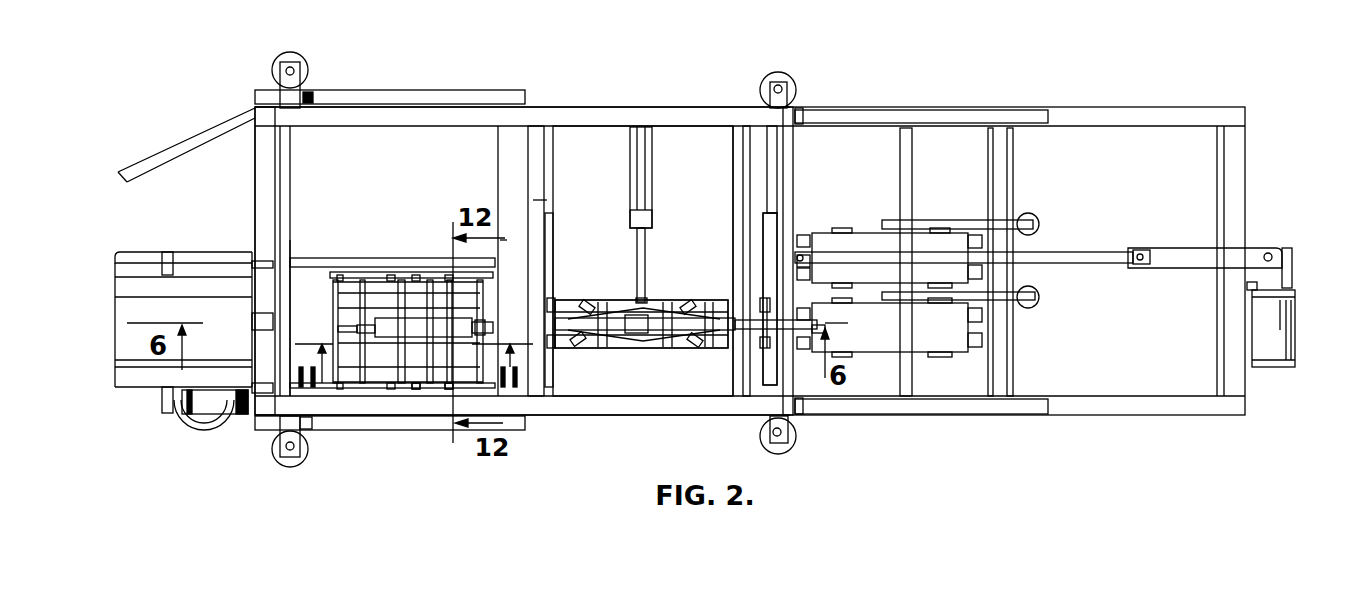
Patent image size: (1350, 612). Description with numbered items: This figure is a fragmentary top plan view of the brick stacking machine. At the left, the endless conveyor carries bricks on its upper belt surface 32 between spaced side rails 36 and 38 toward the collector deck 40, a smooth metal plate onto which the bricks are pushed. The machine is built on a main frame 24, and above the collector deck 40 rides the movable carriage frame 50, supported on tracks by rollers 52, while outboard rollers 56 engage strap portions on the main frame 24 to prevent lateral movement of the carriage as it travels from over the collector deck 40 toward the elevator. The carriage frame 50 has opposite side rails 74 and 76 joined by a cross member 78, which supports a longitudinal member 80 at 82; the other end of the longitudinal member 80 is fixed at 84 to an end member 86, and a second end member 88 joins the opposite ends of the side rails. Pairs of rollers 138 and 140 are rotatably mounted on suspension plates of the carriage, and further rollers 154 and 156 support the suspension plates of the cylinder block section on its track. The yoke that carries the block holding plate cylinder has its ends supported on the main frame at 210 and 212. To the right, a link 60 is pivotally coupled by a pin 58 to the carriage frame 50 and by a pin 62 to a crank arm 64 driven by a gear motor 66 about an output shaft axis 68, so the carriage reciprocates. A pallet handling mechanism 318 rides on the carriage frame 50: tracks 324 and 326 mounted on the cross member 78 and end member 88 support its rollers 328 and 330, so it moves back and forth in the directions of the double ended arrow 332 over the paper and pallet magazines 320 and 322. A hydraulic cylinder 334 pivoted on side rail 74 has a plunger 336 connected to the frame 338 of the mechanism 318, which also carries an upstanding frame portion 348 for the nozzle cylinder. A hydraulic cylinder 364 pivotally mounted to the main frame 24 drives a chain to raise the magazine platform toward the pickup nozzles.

The main frame 24 is at (848, 112).
The upper belt surface 32 is at (240, 347).
The side rail 36 is at (147, 285).
The side rail 38 is at (163, 373).
The collector deck 40 is at (307, 322).
The movable carriage frame 50 is at (628, 115).
The rollers 52 is at (312, 92).
The outboard rollers 56 is at (303, 54).
The pin 58 is at (807, 242).
The link 60 is at (858, 257).
The pin 62 is at (1135, 252).
The crank arm 64 is at (1203, 260).
The gear motor 66 is at (1288, 302).
The output shaft axis 68 is at (1270, 253).
The side rail 74 is at (568, 113).
The side rail 76 is at (603, 410).
The cross member 78 is at (538, 202).
The longitudinal member 80 is at (400, 252).
The support location 82 is at (523, 247).
The fixing location 84 is at (297, 257).
The end member 86 is at (282, 212).
The second end member 88 is at (785, 177).
The rollers 138 is at (353, 270).
The rollers 140 is at (347, 385).
The rollers 154 is at (425, 263).
The rollers 156 is at (450, 388).
The yoke support 210 is at (257, 263).
The yoke support 212 is at (255, 415).
The pallet handling mechanism 318 is at (684, 290).
The magazine 320 is at (927, 242).
The magazine 322 is at (957, 333).
The track 324 is at (553, 287).
The track 326 is at (767, 281).
The roller 328 is at (557, 347).
The roller 330 is at (767, 330).
The double ended arrow 332 is at (682, 162).
The hydraulic cylinder 334 is at (652, 125).
The plunger 336 is at (637, 300).
The frame 338 is at (652, 300).
The upstanding frame portion 348 is at (660, 350).
The hydraulic cylinder 364 is at (1038, 292).